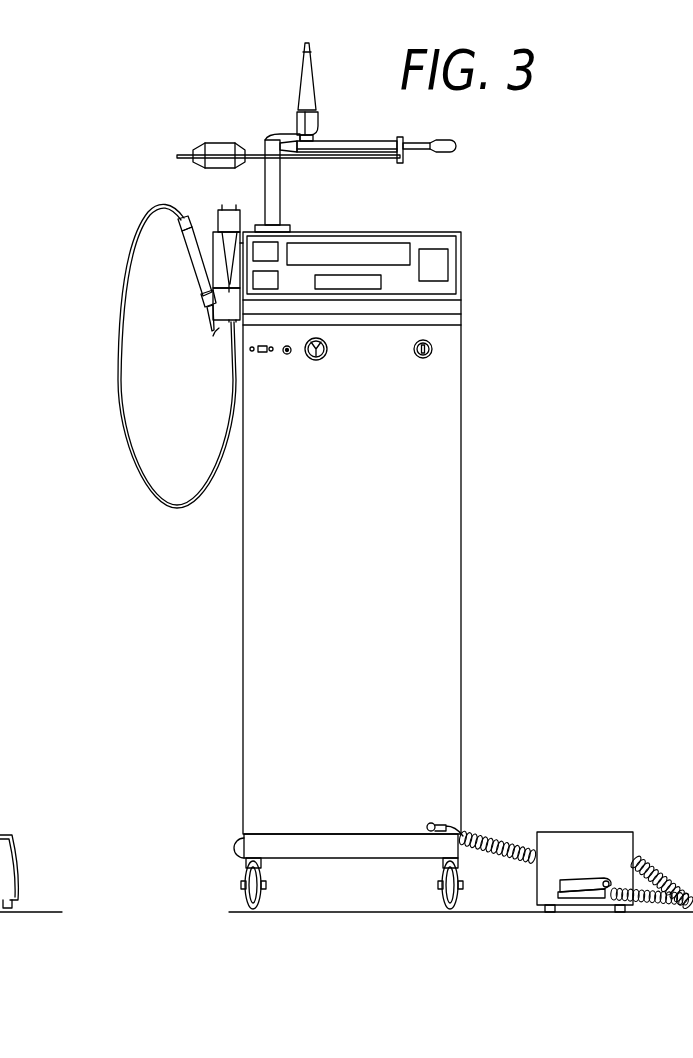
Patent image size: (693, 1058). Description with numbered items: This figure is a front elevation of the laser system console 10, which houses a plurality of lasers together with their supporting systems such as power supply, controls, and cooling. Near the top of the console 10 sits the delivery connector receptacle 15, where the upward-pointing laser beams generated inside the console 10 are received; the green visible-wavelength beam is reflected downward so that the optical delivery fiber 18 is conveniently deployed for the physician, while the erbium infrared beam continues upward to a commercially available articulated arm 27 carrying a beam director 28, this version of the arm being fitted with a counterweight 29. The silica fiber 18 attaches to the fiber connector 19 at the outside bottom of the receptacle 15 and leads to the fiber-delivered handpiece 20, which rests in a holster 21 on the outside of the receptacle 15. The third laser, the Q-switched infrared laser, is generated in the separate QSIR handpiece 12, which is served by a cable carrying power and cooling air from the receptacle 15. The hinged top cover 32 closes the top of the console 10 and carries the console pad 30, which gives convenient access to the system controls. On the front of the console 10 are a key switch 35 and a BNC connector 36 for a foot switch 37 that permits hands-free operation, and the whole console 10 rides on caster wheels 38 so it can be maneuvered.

The console 10 is at (510, 492).
The QSIR handpiece 12 is at (222, 205).
The delivery connector receptacle 15 is at (213, 243).
The optical delivery fiber 18 is at (120, 362).
The 532 nm connector 19 is at (219, 328).
The 532 nm handpiece 20 is at (202, 253).
The holster 21 is at (203, 300).
The articulated arm 27 is at (357, 158).
The beam director 28 is at (300, 89).
The counterweight 29 is at (216, 143).
The console pad 30 is at (453, 272).
The top cover 32 is at (441, 232).
The key switch 35 is at (433, 356).
The BNC connector 36 is at (435, 824).
The foot switch 37 is at (578, 832).
The caster wheels 38 is at (442, 893).